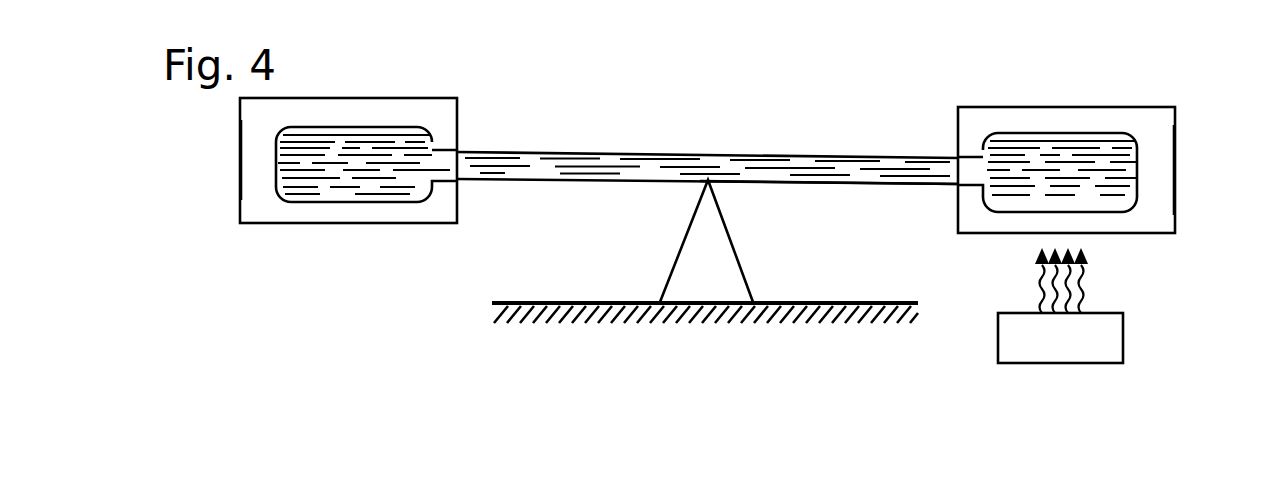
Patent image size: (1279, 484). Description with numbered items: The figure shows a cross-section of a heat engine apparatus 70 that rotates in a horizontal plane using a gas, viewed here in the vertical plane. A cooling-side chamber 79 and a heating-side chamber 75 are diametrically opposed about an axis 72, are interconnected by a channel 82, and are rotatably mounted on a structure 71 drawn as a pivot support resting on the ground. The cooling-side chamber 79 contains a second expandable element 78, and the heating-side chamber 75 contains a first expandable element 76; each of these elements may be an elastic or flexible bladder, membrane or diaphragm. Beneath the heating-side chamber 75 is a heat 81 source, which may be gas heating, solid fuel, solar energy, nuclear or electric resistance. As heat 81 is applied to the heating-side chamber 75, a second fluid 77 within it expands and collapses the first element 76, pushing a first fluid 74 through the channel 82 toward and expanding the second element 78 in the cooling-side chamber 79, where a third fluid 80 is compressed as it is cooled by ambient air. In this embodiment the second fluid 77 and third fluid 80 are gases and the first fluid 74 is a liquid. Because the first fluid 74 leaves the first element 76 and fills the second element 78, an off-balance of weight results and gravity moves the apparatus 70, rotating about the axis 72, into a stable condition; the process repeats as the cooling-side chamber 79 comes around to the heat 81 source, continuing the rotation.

The apparatus 70 is at (1178, 43).
The structure 71 is at (672, 262).
The axis 72 is at (707, 179).
The first fluid 74 is at (783, 166).
The heating-side chamber 75 is at (1133, 107).
The first element 76 is at (1083, 212).
The second fluid 77 is at (1158, 138).
The second element 78 is at (371, 203).
The cooling-side chamber 79 is at (411, 98).
The third fluid 80 is at (255, 127).
The heat 81 is at (1124, 346).
The channel 82 is at (850, 186).